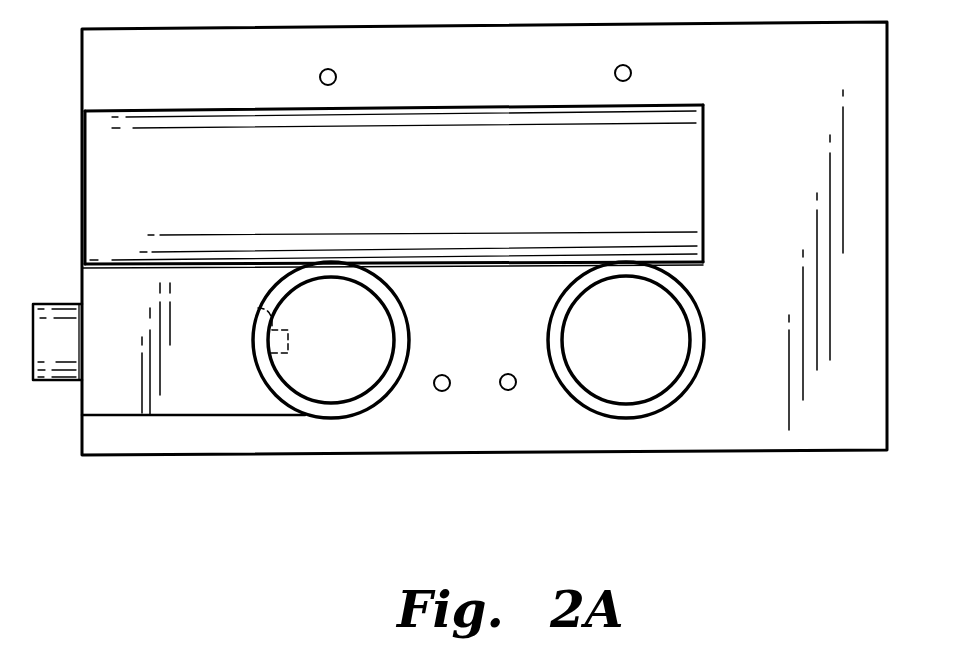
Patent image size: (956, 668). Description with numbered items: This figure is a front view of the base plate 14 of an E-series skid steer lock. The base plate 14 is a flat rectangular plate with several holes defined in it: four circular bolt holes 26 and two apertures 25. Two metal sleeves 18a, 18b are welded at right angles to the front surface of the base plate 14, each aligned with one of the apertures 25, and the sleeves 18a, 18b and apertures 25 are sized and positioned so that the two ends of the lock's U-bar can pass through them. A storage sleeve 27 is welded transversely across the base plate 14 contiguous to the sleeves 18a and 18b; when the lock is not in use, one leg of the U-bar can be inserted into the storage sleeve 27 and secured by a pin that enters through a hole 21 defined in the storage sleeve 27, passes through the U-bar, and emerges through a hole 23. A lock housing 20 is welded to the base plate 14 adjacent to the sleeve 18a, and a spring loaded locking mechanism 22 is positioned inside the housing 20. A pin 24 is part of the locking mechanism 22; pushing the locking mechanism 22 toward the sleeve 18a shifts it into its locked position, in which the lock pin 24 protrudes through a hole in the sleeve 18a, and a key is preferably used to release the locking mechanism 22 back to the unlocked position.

The base plate 14 is at (843, 450).
The metal sleeve 18a is at (347, 412).
The metal sleeve 18b is at (668, 393).
The lock housing 20 is at (200, 413).
The hole 21 is at (484, 108).
The locking mechanism 22 is at (53, 382).
The hole 23 is at (486, 262).
The pin 24 is at (258, 308).
The aperture 25 is at (380, 327).
The bolt hole 26 is at (336, 73).
The storage sleeve 27 is at (703, 147).